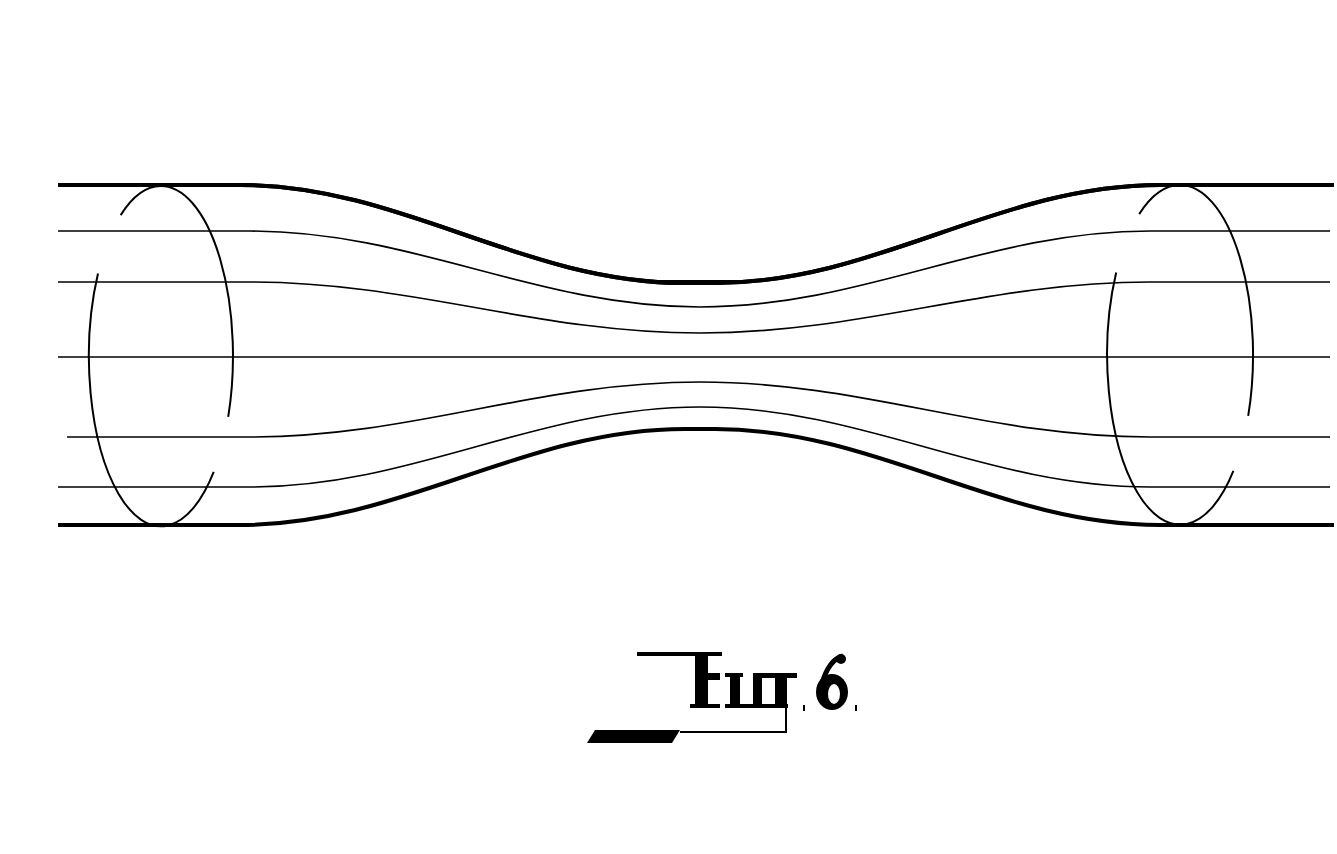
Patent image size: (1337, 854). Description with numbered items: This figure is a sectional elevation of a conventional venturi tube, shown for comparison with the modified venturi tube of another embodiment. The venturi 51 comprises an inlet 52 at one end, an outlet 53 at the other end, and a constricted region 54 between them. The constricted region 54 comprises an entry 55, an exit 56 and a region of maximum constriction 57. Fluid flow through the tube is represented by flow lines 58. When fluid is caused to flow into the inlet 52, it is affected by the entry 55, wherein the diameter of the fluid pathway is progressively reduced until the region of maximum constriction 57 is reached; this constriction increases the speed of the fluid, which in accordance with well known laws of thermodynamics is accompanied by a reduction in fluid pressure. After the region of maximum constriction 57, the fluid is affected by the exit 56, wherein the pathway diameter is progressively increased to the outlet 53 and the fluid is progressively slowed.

The venturi 51 is at (811, 197).
The inlet 52 is at (200, 210).
The outlet 53 is at (1220, 213).
The constricted region 54 is at (572, 470).
The entry 55 is at (400, 204).
The exit 56 is at (933, 227).
The region of maximum constriction 57 is at (682, 281).
The flow lines 58 is at (1062, 433).